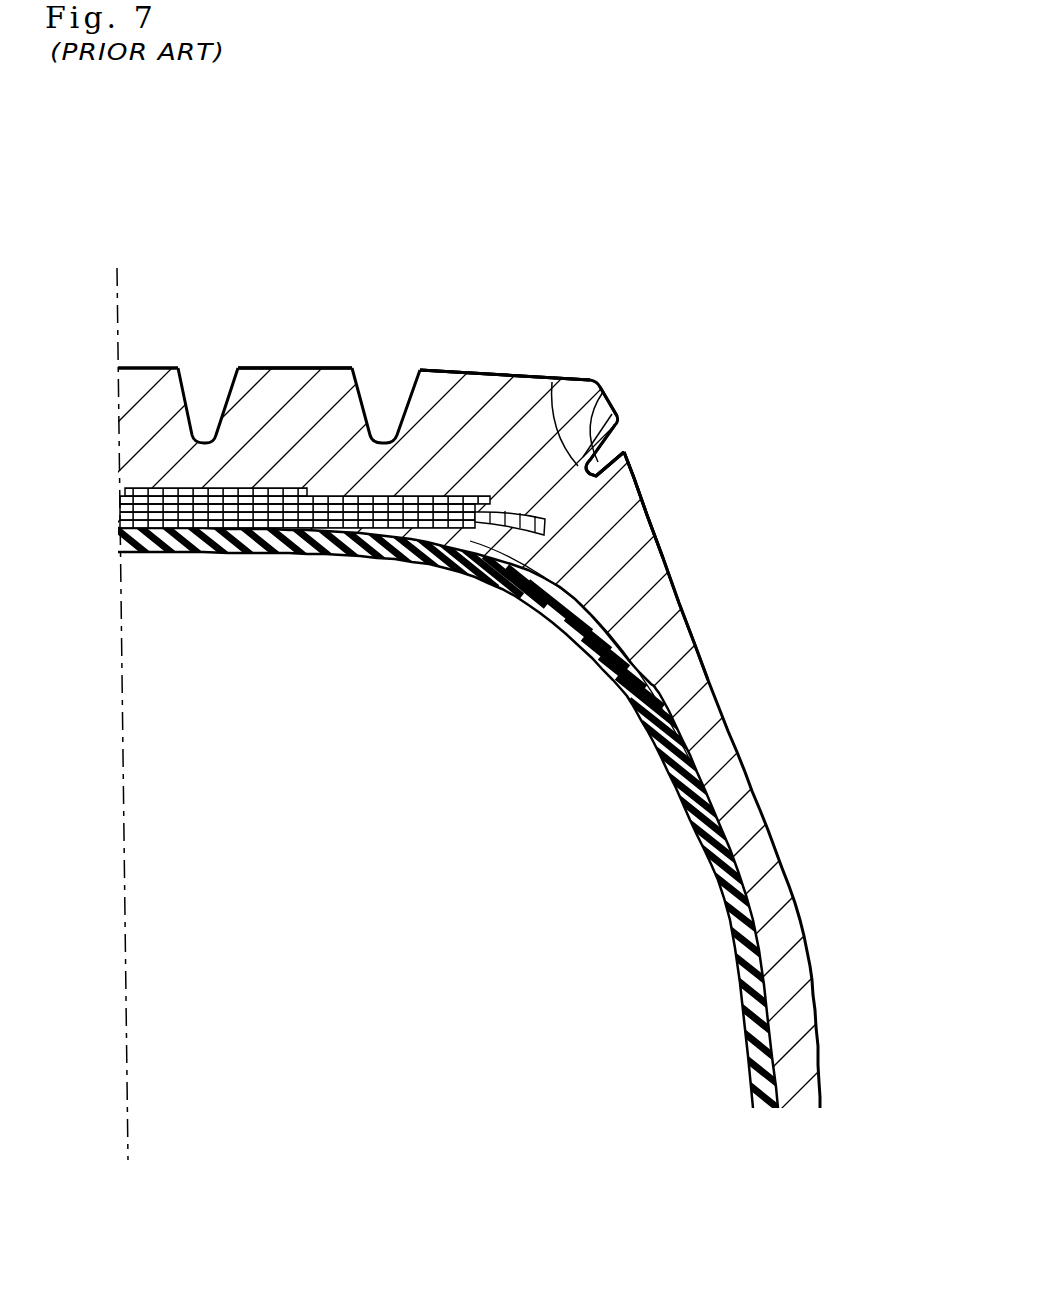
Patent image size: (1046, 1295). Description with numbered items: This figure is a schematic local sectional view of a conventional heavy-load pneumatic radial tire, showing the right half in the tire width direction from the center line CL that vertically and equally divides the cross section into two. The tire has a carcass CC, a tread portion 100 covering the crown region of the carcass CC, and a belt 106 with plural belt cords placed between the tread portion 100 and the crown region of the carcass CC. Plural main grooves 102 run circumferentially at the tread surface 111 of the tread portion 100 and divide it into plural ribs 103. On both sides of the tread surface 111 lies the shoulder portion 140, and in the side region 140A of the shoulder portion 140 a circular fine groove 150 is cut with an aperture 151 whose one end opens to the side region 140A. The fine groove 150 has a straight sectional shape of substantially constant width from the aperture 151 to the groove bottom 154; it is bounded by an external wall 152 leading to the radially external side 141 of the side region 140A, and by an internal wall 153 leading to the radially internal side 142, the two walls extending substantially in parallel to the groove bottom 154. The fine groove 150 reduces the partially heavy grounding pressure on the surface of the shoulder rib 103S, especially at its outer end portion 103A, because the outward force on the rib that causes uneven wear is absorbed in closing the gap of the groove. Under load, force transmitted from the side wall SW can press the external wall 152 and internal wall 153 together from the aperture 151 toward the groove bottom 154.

The tread portion 100 is at (520, 393).
The main groove 102 is at (203, 395).
The rib 103 is at (255, 385).
The rib in the shoulder portion 103S is at (466, 392).
The end portion of the rib 103A is at (630, 420).
The belt 106 is at (155, 488).
The tread surface 111 is at (293, 390).
The shoulder portion 140 is at (582, 397).
The side region of the shoulder portion 140A is at (642, 500).
The external side of the side region 141 is at (617, 400).
The internal side of the side region 142 is at (650, 530).
The fine groove 150 is at (628, 442).
The aperture 151 is at (623, 430).
The external wall 152 is at (622, 410).
The internal wall 153 is at (628, 458).
The groove bottom 154 is at (548, 397).
The carcass CC is at (650, 685).
The side wall SW is at (750, 808).
The center line CL is at (122, 305).